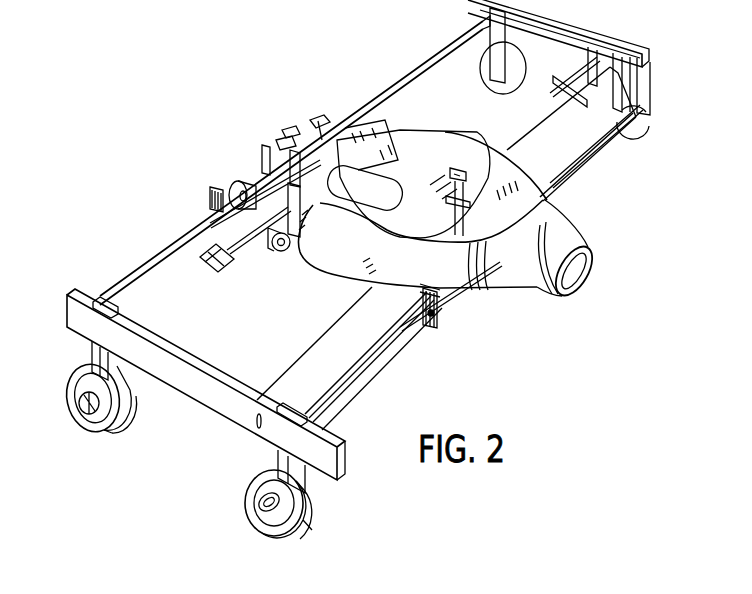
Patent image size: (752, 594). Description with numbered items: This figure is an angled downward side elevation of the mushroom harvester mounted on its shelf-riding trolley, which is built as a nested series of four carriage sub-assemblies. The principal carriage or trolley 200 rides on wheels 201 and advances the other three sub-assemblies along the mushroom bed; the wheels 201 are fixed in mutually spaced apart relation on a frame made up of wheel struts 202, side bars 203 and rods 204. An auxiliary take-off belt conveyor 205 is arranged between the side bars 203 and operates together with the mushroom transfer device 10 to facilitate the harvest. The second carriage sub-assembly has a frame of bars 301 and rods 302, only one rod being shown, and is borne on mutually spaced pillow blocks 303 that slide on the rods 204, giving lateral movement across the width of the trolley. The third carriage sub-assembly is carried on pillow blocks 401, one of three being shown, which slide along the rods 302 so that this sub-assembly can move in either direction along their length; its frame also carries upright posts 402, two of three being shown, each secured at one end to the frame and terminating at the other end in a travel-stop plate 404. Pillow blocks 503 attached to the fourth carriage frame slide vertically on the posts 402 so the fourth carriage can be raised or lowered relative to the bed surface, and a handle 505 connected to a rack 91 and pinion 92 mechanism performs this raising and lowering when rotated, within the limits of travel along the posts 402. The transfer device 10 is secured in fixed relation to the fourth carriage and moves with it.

The mushroom transfer device 10 is at (388, 212).
The rack 91 is at (280, 150).
The pinion 92 is at (285, 140).
The principal carriage or trolley 200 is at (626, 38).
The wheels 201 is at (106, 431).
The wheel struts 202 is at (120, 382).
The side bars 203 is at (92, 322).
The rods 204 is at (424, 58).
The belt conveyor 205 is at (598, 130).
The bars 301 is at (245, 185).
The rods 302 is at (382, 303).
The pillow blocks 303 is at (210, 222).
The pillow blocks 401 is at (288, 258).
The upright posts 402 is at (370, 125).
The travel-stop plate 404 is at (266, 160).
The pillow blocks 503 is at (577, 226).
The handle 505 is at (213, 264).